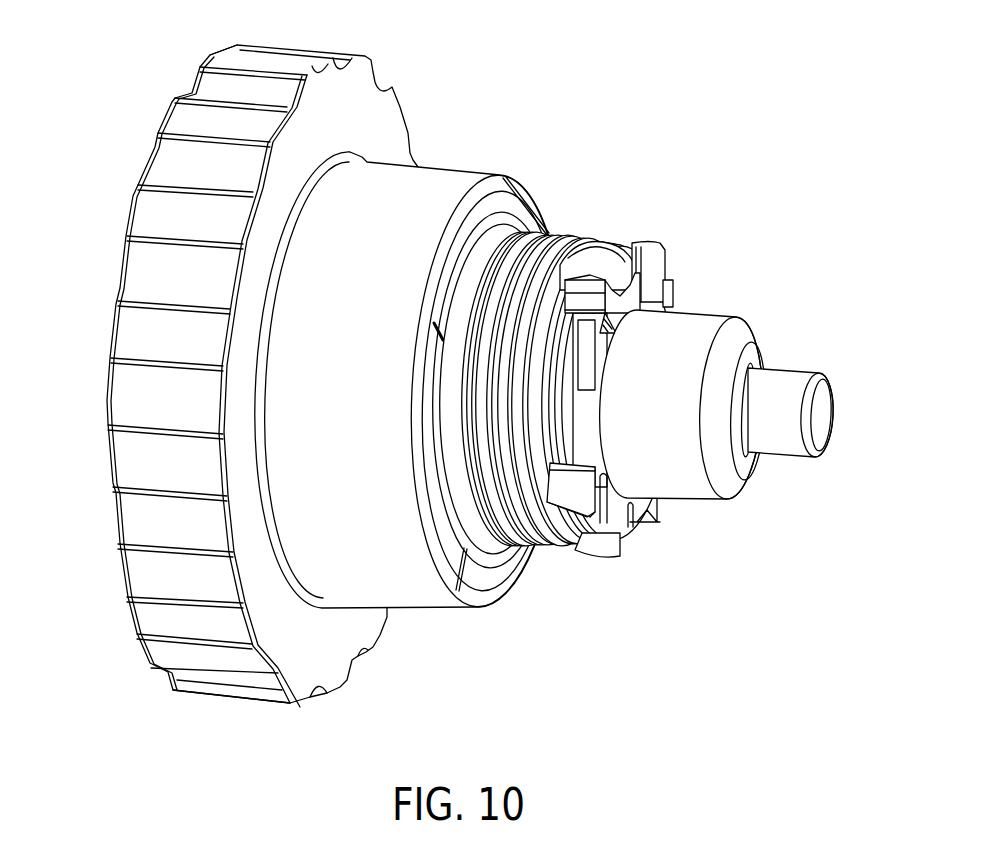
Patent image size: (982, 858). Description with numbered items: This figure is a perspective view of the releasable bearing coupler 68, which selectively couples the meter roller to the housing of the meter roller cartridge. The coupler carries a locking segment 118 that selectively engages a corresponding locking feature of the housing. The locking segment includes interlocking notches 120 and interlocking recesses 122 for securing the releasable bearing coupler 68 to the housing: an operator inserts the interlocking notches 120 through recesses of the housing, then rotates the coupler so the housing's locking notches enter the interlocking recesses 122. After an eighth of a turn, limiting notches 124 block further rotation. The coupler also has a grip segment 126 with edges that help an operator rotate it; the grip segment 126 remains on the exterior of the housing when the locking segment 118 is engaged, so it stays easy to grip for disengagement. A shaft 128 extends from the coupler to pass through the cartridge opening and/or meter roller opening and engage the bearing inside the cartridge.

The releasable bearing coupler 68 is at (512, 63).
The locking segment 118 is at (731, 330).
The interlocking notches 120 is at (632, 397).
The interlocking recesses 122 is at (583, 517).
The limiting notches 124 is at (587, 300).
The grip segment 126 is at (90, 267).
The shaft 128 is at (788, 373).